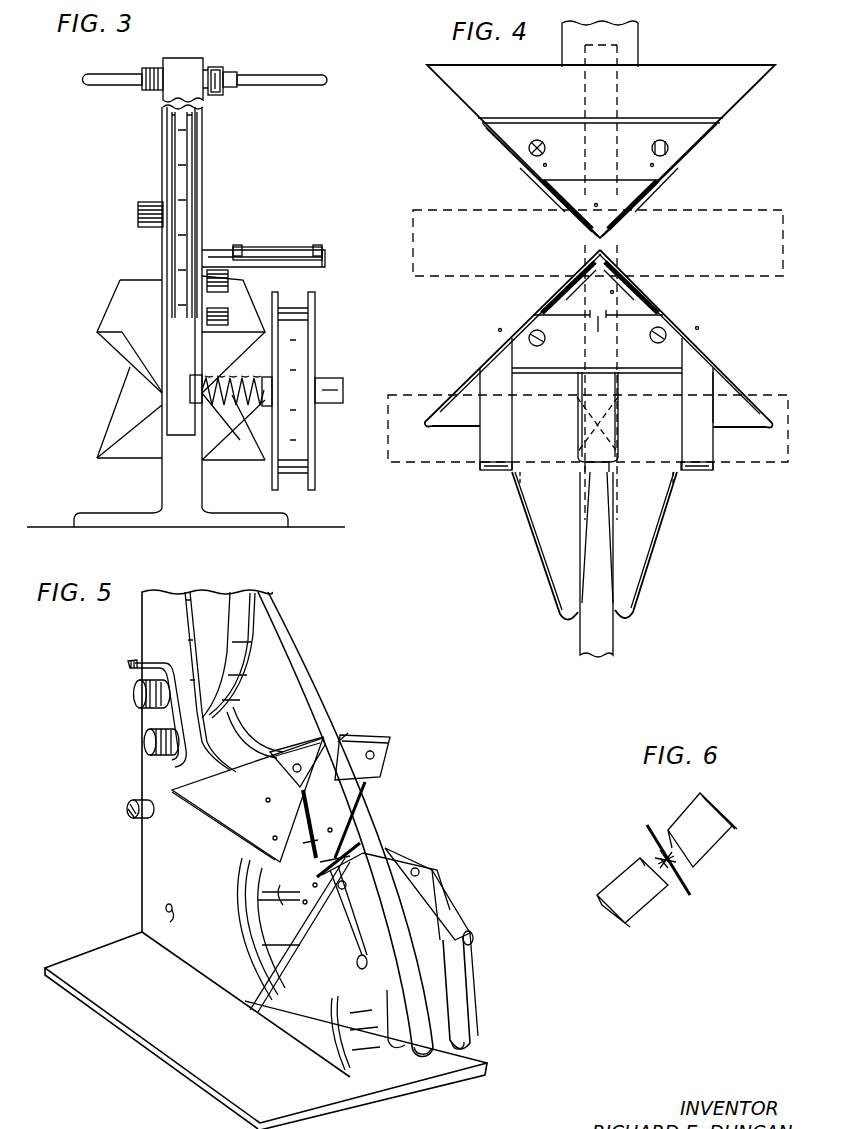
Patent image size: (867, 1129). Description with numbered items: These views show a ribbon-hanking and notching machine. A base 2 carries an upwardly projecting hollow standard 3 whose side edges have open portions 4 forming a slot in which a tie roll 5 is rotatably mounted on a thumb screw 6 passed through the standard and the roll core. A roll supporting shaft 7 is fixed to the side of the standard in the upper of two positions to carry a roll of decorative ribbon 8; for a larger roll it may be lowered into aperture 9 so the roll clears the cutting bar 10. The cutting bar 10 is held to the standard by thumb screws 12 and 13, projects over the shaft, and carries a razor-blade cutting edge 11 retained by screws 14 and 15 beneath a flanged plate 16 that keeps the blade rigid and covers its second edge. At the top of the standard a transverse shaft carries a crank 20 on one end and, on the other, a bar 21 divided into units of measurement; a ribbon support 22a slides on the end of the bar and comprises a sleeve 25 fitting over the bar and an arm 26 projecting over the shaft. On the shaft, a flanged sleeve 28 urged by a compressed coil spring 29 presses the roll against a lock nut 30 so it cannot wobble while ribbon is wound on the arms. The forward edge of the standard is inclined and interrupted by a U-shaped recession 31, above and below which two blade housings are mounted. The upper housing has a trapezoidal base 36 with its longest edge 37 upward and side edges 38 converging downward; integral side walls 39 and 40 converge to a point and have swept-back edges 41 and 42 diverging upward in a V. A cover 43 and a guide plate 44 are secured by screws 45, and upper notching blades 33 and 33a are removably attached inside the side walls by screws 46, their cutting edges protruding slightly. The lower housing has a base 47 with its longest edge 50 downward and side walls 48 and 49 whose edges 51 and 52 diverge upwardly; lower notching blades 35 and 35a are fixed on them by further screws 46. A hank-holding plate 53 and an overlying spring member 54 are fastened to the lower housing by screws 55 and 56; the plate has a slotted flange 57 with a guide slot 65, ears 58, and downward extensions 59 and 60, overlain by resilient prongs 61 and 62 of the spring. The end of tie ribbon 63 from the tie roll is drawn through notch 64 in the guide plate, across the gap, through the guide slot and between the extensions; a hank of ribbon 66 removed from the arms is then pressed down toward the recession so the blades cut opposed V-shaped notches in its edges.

In FIG. 3, the base 2 is at (103, 517).
In FIG. 5, the base 2 is at (140, 1007).
In FIG. 3, the standard 3 is at (165, 490).
In FIG. 5, the standard 3 is at (152, 866).
In FIG. 3, the open side portions 4 is at (176, 339).
In FIG. 5, the open side portions 4 is at (227, 735).
In FIG. 3, the tie roll 5 is at (180, 160).
In FIG. 5, the tie roll 5 is at (206, 608).
In FIG. 3, the thumb screw 6 is at (138, 212).
In FIG. 3, the roll supporting shaft 7 is at (222, 380).
In FIG. 5, the roll supporting shaft 7 is at (127, 809).
In FIG. 3, the roll of decorative ribbon 8 is at (302, 344).
In FIG. 5, the aperture 9 is at (175, 915).
In FIG. 3, the cutting bar 10 is at (292, 268).
In FIG. 5, the cutting bar 10 is at (128, 664).
In FIG. 3, the cutting edge 11 is at (280, 248).
In FIG. 3, the thumb screw 12 is at (228, 283).
In FIG. 5, the thumb screw 12 is at (134, 696).
In FIG. 3, the thumb screw 13 is at (228, 318).
In FIG. 5, the thumb screw 13 is at (144, 743).
In FIG. 3, the screw 14 is at (250, 251).
In FIG. 3, the screw 15 is at (312, 251).
In FIG. 3, the flanged plate 16 is at (325, 256).
In FIG. 3, the crank 20 is at (121, 73).
In FIG. 3, the bar 21 is at (215, 67).
In FIG. 3, the ribbon support 22a is at (236, 73).
In FIG. 3, the sleeve 25 is at (218, 95).
In FIG. 3, the arm 26 is at (285, 83).
In FIG. 3, the flanged sleeve 28 is at (268, 400).
In FIG. 3, the coil spring 29 is at (230, 425).
In FIG. 3, the lock nut 30 is at (338, 386).
In FIG. 5, the U-shaped recession 31 is at (262, 891).
In FIG. 4, the upper notching blade 33 is at (568, 217).
In FIG. 5, the upper notching blade 33 is at (326, 806).
In FIG. 4, the upper notching blade 33a is at (632, 215).
In FIG. 5, the upper notching blade 33a is at (370, 788).
In FIG. 4, the lower notching blade 35 is at (568, 263).
In FIG. 5, the lower notching blade 35 is at (328, 851).
In FIG. 4, the lower notching blade 35a is at (623, 263).
In FIG. 3, the base 36 is at (124, 340).
In FIG. 3, the longest edge 37 is at (106, 334).
In FIG. 3, the side edges 38 is at (126, 362).
In FIG. 5, the side edges 38 is at (217, 831).
In FIG. 4, the side wall 39 is at (522, 171).
In FIG. 5, the side wall 39 is at (218, 800).
In FIG. 4, the side wall 40 is at (676, 176).
In FIG. 4, the edge 41 is at (548, 197).
In FIG. 5, the edge 41 is at (303, 844).
In FIG. 4, the edge 42 is at (650, 198).
In FIG. 3, the cover 43 is at (106, 302).
In FIG. 4, the cover 43 is at (683, 74).
In FIG. 3, the guide plate 44 is at (160, 276).
In FIG. 4, the guide plate 44 is at (690, 138).
In FIG. 5, the guide plate 44 is at (392, 740).
In FIG. 4, the screws 45 is at (652, 148).
In FIG. 5, the screws 45 is at (293, 768).
In FIG. 4, the screws 46 is at (512, 153).
In FIG. 5, the screws 46 is at (268, 802).
In FIG. 3, the base 47 is at (131, 458).
In FIG. 4, the base 47 is at (460, 413).
In FIG. 5, the base 47 is at (290, 979).
In FIG. 3, the side wall 48 is at (250, 432).
In FIG. 4, the side wall 48 is at (458, 384).
In FIG. 5, the side wall 48 is at (286, 939).
In FIG. 3, the side wall 49 is at (118, 411).
In FIG. 4, the side wall 49 is at (740, 386).
In FIG. 3, the longest edge 50 is at (226, 462).
In FIG. 4, the longest edge 50 is at (733, 428).
In FIG. 5, the longest edge 50 is at (292, 1012).
In FIG. 4, the edge 51 is at (560, 284).
In FIG. 4, the edge 52 is at (640, 281).
In FIG. 4, the plate 53 is at (702, 364).
In FIG. 5, the plate 53 is at (442, 889).
In FIG. 4, the spring member 54 is at (650, 426).
In FIG. 5, the spring member 54 is at (455, 976).
In FIG. 4, the screw 55 is at (538, 346).
In FIG. 5, the screw 55 is at (346, 878).
In FIG. 4, the screw 56 is at (660, 343).
In FIG. 5, the screw 56 is at (418, 868).
In FIG. 4, the slotted flange 57 is at (583, 312).
In FIG. 5, the slotted flange 57 is at (386, 848).
In FIG. 4, the ears 58 is at (494, 473).
In FIG. 5, the ears 58 is at (364, 961).
In FIG. 4, the extension 59 is at (582, 504).
In FIG. 5, the extension 59 is at (422, 1058).
In FIG. 4, the extension 60 is at (618, 505).
In FIG. 5, the extension 60 is at (472, 1052).
In FIG. 4, the resilient prong 61 is at (552, 548).
In FIG. 5, the resilient prong 61 is at (392, 998).
In FIG. 4, the resilient prong 62 is at (655, 556).
In FIG. 5, the resilient prong 62 is at (460, 1006).
In FIG. 4, the tie ribbon 63 is at (602, 635).
In FIG. 5, the tie ribbon 63 is at (396, 1058).
In FIG. 6, the tie ribbon 63 is at (692, 888).
In FIG. 4, the notch 64 is at (591, 120).
In FIG. 5, the notch 64 is at (338, 743).
In FIG. 4, the guide slot 65 is at (598, 324).
In FIG. 5, the guide slot 65 is at (356, 856).
In FIG. 4, the hank of ribbon 66 is at (455, 278).
In FIG. 6, the hank of ribbon 66 is at (638, 907).